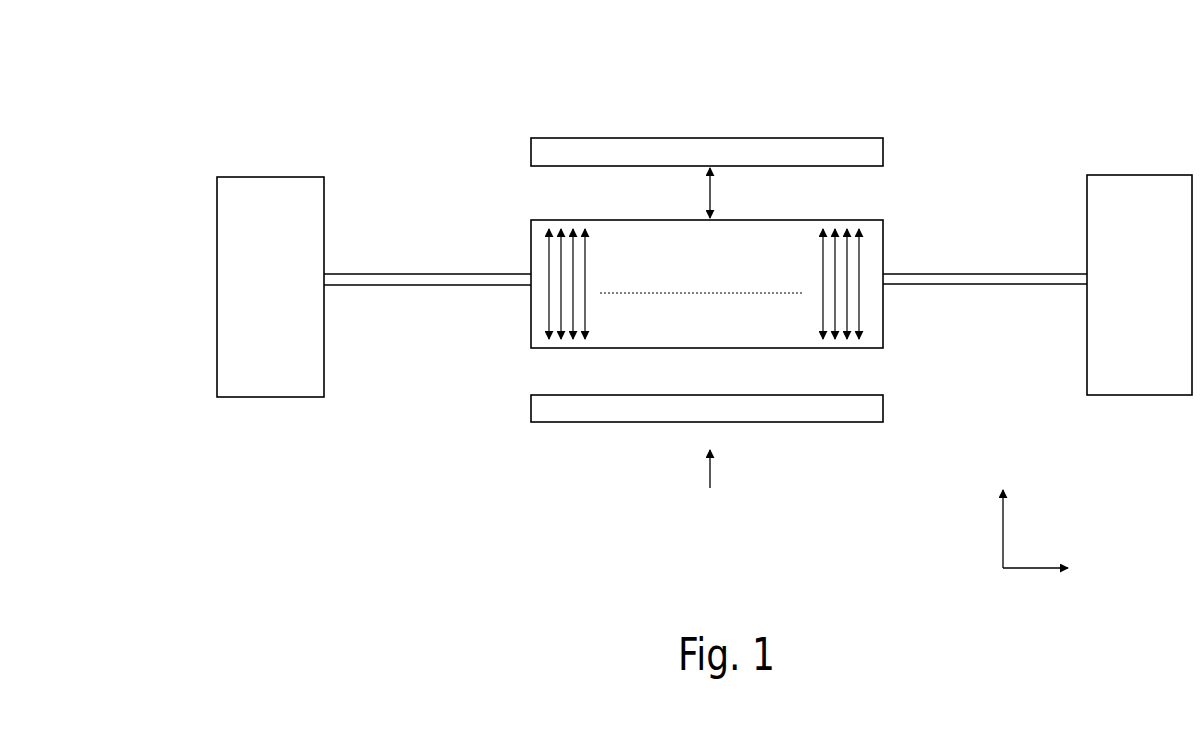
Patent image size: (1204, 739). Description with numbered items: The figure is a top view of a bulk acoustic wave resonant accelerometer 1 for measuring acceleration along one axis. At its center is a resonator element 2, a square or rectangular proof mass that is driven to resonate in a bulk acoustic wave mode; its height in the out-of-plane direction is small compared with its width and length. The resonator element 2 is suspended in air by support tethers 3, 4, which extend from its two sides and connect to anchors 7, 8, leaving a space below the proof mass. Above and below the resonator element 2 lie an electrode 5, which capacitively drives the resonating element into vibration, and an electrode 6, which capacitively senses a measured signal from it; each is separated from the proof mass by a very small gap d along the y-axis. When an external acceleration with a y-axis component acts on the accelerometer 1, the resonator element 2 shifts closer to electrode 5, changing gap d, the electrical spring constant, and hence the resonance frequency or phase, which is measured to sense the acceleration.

The bulk acoustic wave resonant accelerometer 1 is at (434, 112).
The resonator element 2 is at (875, 220).
The support tether 3 is at (1003, 272).
The support tether 4 is at (395, 273).
The electrode 5 is at (820, 138).
The electrode 6 is at (815, 423).
The anchor 7 is at (251, 176).
The anchor 8 is at (1153, 175).